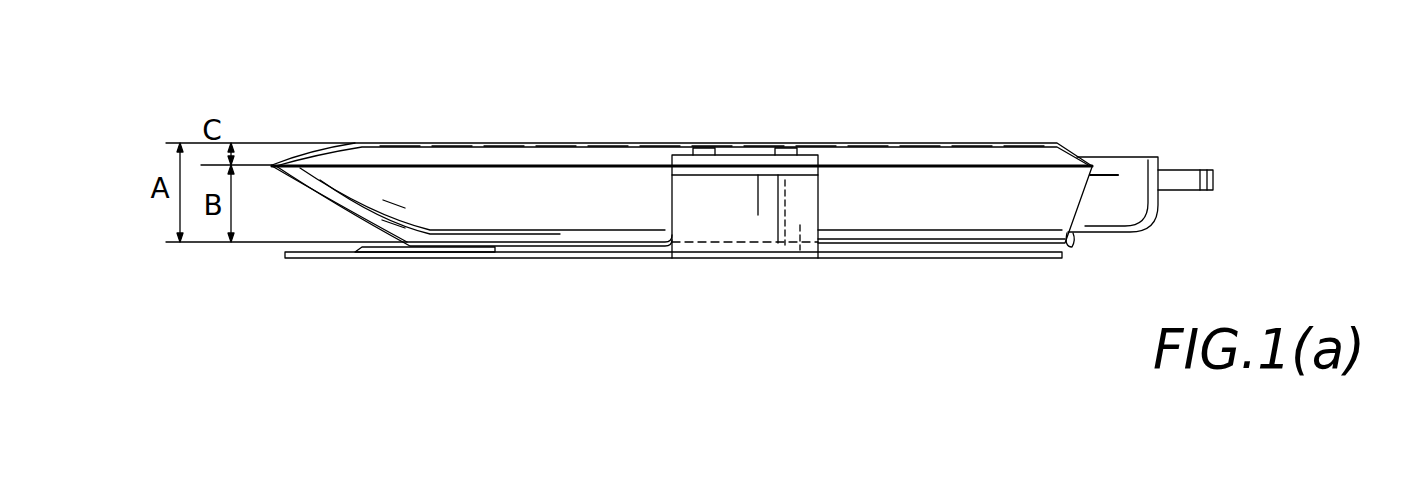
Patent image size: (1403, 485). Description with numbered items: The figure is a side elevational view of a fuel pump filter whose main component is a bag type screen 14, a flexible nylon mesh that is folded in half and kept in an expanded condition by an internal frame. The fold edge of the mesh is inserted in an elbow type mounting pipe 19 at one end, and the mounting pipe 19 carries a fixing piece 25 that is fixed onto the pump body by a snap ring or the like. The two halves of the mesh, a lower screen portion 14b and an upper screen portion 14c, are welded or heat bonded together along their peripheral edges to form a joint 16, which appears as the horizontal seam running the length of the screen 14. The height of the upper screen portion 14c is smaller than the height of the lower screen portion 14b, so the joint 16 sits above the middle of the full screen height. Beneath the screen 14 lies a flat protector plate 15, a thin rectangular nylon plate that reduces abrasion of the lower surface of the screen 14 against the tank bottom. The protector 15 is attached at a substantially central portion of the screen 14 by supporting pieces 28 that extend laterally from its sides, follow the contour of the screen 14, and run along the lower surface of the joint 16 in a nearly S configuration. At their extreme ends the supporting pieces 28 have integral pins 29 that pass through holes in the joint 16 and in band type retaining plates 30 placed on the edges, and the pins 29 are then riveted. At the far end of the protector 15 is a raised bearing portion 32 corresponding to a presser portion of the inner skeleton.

The bag type screen 14 is at (525, 158).
The lower screen portion 14b is at (472, 210).
The upper screen portion 14c is at (428, 157).
The protector plate 15 is at (613, 258).
The joint 16 is at (957, 165).
The mounting pipe 19 is at (1128, 165).
The fixing piece 25 is at (1187, 180).
The supporting piece 28 is at (742, 230).
The pin 29 is at (703, 148).
The retaining plate 30 is at (808, 155).
The raised bearing portion 32 is at (382, 258).